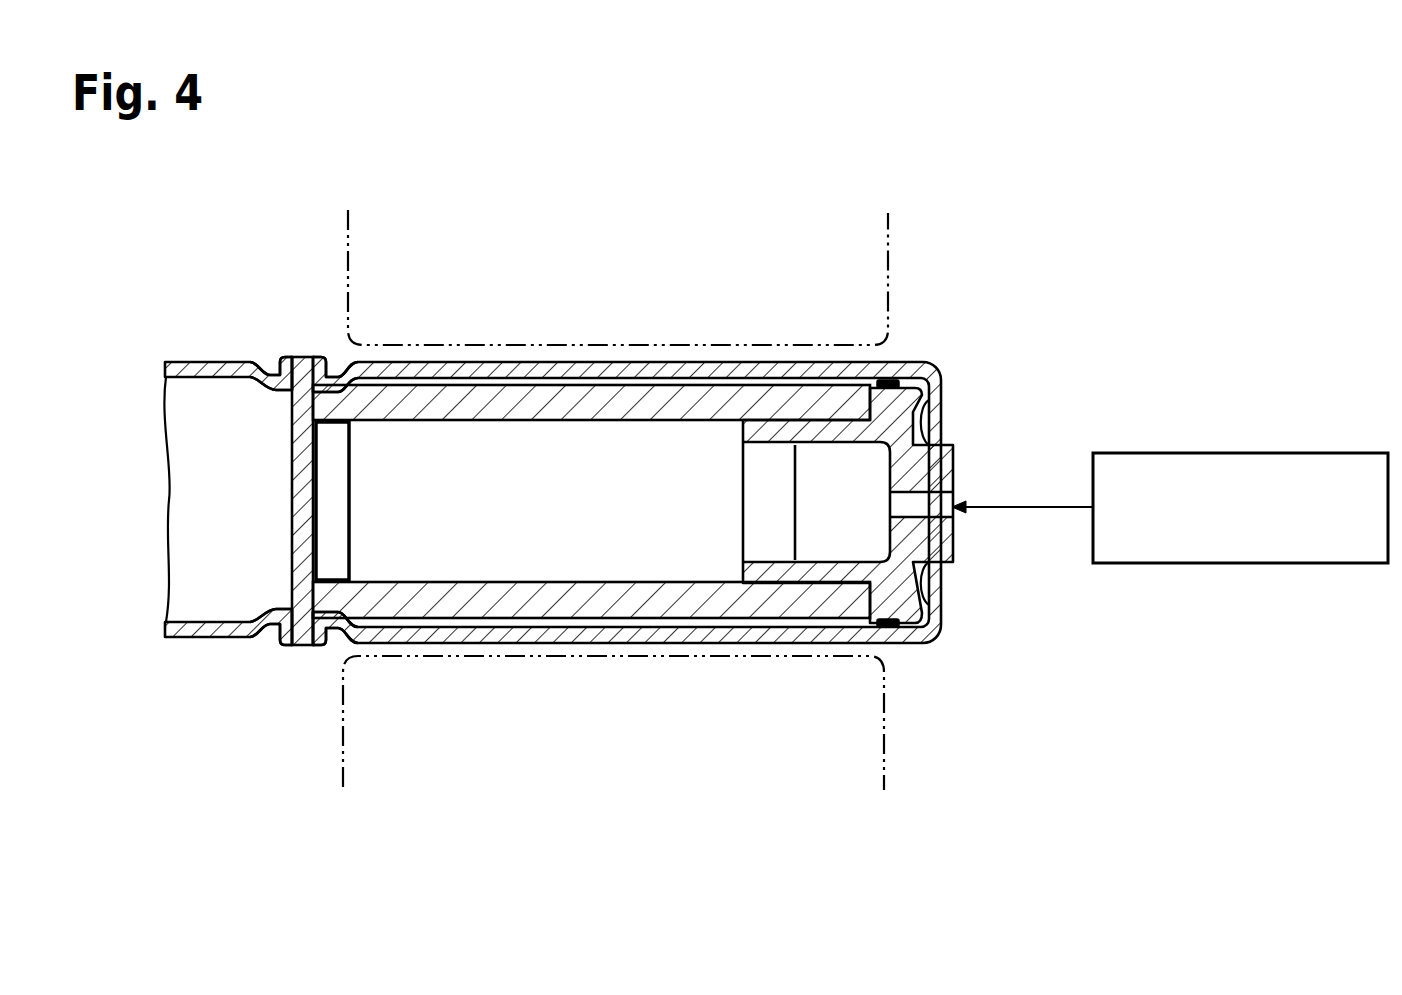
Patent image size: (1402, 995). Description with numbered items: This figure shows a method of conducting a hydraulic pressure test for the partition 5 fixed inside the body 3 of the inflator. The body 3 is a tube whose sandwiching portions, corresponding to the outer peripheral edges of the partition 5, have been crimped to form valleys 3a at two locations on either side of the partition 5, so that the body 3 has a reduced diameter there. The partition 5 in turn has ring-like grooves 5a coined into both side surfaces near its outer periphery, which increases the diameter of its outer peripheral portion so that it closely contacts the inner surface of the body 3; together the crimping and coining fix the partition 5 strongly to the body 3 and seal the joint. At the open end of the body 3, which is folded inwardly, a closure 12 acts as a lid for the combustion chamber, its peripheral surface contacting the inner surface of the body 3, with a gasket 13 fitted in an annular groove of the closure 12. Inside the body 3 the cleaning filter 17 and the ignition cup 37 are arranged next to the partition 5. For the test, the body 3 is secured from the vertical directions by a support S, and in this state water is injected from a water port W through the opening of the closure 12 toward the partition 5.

The body 3 is at (590, 363).
The valleys 3a is at (327, 645).
The partition 5 is at (292, 448).
The ring-like grooves 5a is at (327, 360).
The closure 12 is at (833, 580).
The gasket 13 is at (893, 380).
The cleaning filter 17 is at (603, 605).
The ignition cup 37 is at (345, 525).
The support S is at (872, 258).
The water port W is at (1278, 453).